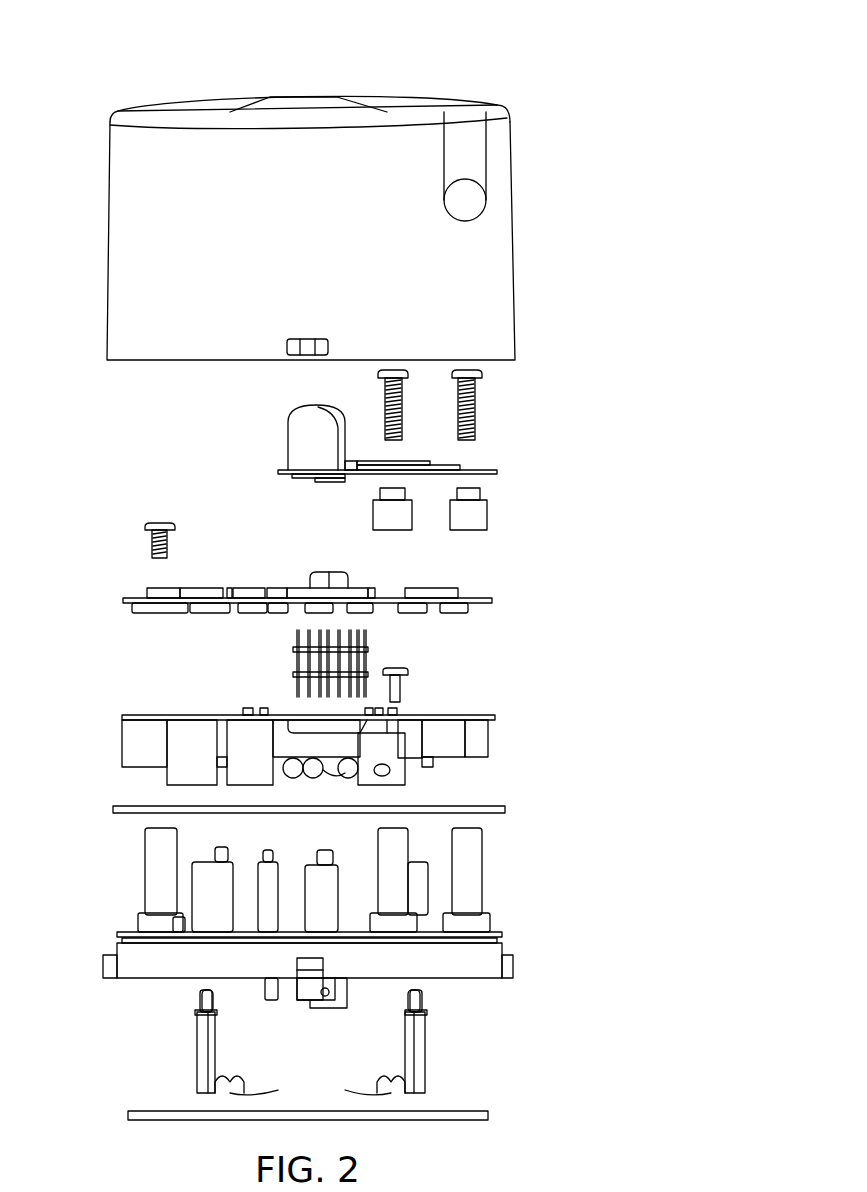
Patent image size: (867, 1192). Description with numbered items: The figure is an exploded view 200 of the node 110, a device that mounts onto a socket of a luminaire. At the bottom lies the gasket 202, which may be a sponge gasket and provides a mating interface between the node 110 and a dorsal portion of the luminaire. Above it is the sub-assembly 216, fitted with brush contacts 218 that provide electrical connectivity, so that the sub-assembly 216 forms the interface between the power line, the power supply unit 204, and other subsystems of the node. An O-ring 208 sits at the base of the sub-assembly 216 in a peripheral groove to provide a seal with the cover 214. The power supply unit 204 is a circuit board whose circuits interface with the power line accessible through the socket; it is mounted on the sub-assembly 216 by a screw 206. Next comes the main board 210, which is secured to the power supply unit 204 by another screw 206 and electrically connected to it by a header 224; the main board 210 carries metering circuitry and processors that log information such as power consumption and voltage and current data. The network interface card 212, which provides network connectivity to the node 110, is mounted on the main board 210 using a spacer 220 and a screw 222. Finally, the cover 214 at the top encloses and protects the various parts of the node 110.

The node 110 is at (120, 95).
The exploded view 200 is at (422, 60).
The gasket 202 is at (492, 1111).
The power supply unit 204 is at (494, 730).
The screw 206 is at (143, 524).
The O-ring 208 is at (507, 807).
The main board 210 is at (125, 601).
The network interface card 212 is at (498, 468).
The cover 214 is at (513, 238).
The sub-assembly 216 is at (503, 942).
The brush contacts 218 is at (195, 1044).
The spacer 220 is at (488, 511).
The screw 222 is at (476, 400).
The header 224 is at (295, 678).